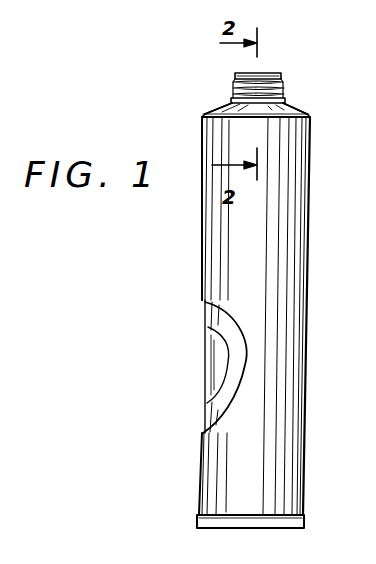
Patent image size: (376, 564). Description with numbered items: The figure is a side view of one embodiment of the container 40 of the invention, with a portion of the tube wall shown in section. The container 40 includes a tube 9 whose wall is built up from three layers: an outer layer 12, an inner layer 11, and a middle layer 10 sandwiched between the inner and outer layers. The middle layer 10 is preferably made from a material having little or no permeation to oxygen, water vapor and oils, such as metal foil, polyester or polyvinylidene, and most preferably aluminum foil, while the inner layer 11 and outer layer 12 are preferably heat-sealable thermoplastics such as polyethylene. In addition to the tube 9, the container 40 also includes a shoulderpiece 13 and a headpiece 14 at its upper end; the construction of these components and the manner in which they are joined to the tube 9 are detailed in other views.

The tube 9 is at (309, 196).
The middle layer 10 is at (205, 315).
The inner layer 11 is at (208, 356).
The outer layer 12 is at (199, 461).
The shoulderpiece 13 is at (212, 112).
The headpiece 14 is at (284, 77).
The container 40 is at (202, 245).